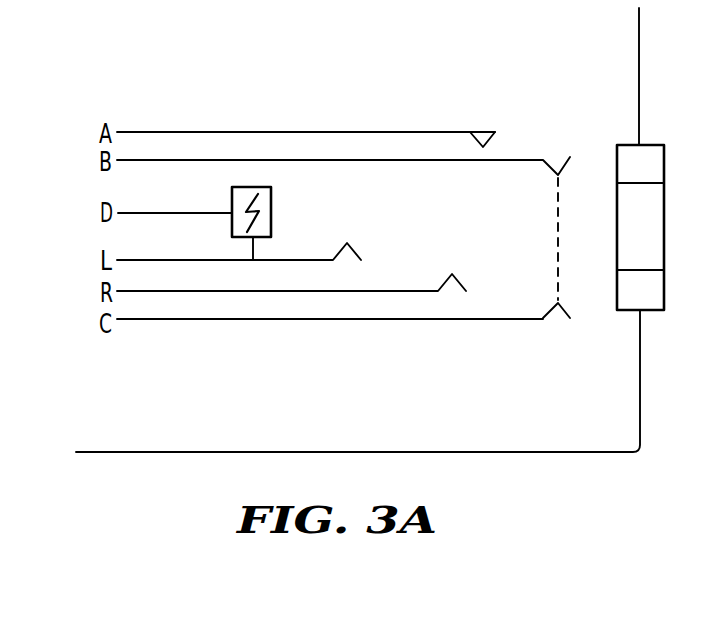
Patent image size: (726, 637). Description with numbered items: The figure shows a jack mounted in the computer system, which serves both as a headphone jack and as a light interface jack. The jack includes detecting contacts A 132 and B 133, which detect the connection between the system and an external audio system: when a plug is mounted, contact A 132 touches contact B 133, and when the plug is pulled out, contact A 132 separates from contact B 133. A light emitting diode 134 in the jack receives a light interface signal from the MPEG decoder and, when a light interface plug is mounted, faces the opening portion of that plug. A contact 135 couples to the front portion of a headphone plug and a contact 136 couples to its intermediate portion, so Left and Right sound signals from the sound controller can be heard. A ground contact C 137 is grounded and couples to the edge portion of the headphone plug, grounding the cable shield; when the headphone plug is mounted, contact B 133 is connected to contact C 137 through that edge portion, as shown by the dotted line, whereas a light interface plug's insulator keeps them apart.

The detecting contact A 132 is at (290, 131).
The detecting contact B 133 is at (397, 160).
The light emitting diode 134 is at (252, 260).
The contact 135 is at (289, 260).
The contact 136 is at (380, 291).
The ground contact C 137 is at (481, 319).